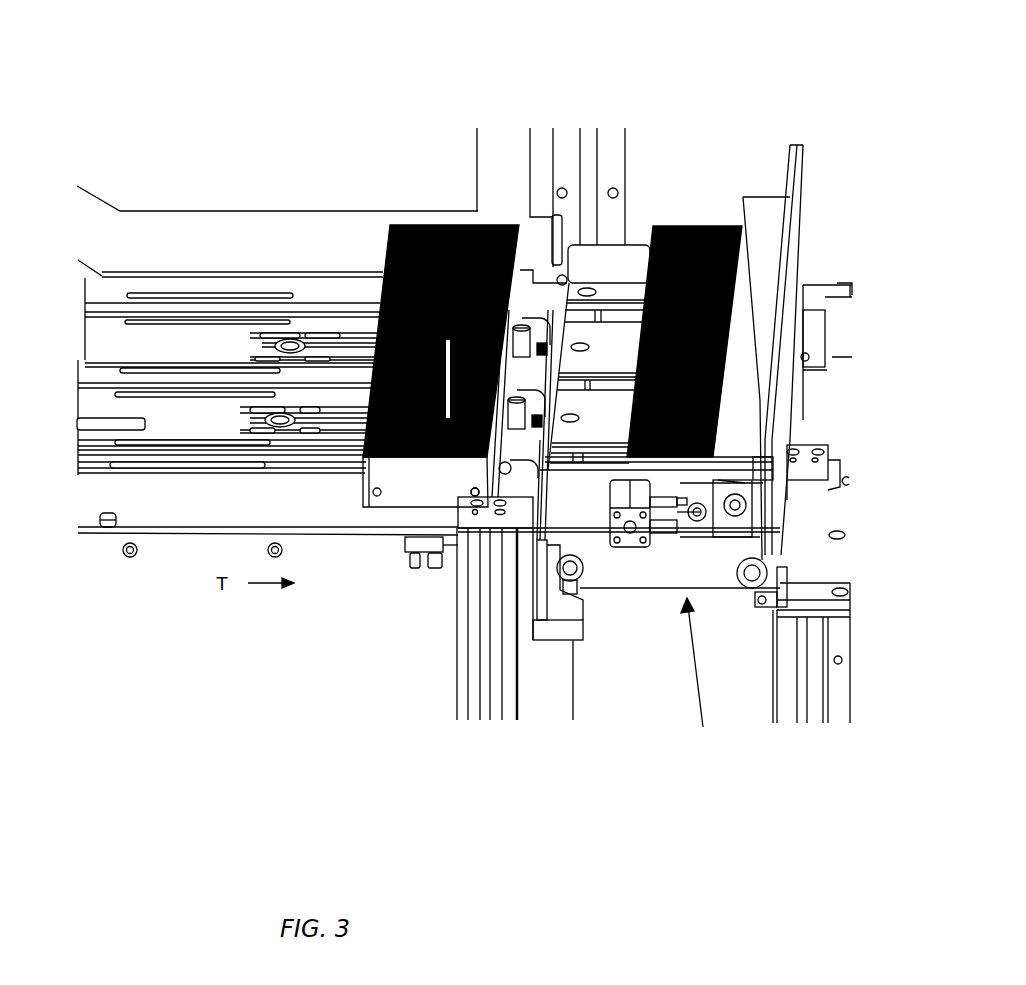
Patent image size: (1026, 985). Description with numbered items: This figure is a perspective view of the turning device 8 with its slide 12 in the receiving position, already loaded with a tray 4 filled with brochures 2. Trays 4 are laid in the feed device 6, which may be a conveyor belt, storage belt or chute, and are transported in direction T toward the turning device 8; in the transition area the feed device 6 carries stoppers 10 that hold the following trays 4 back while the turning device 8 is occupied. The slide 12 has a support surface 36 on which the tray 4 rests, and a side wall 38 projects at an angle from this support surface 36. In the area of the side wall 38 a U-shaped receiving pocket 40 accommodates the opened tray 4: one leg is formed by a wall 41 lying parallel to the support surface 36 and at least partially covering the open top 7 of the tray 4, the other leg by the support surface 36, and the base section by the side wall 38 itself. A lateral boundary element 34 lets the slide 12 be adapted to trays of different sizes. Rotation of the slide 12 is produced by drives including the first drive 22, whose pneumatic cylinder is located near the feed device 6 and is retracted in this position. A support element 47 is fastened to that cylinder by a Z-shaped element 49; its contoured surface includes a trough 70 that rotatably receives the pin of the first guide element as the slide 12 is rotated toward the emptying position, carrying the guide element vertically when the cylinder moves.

The brochures 2 is at (427, 222).
The tray 4 is at (380, 272).
The feed device 6 is at (203, 307).
The top of the tray 7 is at (407, 222).
The turning device 8 is at (695, 680).
The stoppers 10 is at (520, 313).
The slide 12 is at (635, 567).
The first drive 22 is at (477, 670).
The lateral boundary element 34 is at (718, 507).
The support surface 36 is at (590, 517).
The side wall 38 is at (802, 240).
The receiving pocket 40 is at (725, 487).
The wall 41 is at (753, 220).
The support element 47 is at (568, 612).
The Z-shaped element 49 is at (462, 543).
The trough 70 is at (556, 640).